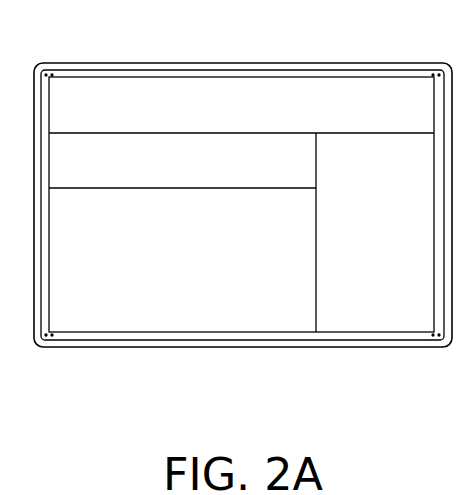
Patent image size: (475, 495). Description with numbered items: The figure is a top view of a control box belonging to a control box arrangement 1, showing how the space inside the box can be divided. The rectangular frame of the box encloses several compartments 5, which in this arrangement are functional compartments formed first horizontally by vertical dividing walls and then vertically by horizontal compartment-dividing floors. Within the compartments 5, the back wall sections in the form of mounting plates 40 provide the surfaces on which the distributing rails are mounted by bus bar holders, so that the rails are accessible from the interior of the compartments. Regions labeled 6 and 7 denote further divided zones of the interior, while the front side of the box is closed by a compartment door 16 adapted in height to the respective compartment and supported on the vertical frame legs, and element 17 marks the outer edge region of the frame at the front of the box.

The control box arrangement 1 is at (153, 386).
The horizontal compartment 5 is at (98, 312).
The compartment / frame portion 6 is at (121, 170).
The top panel strip 7 is at (382, 93).
The compartment door 16 is at (192, 340).
The bottom outer frame edge 17 is at (367, 348).
The mounting plate 40 is at (194, 188).